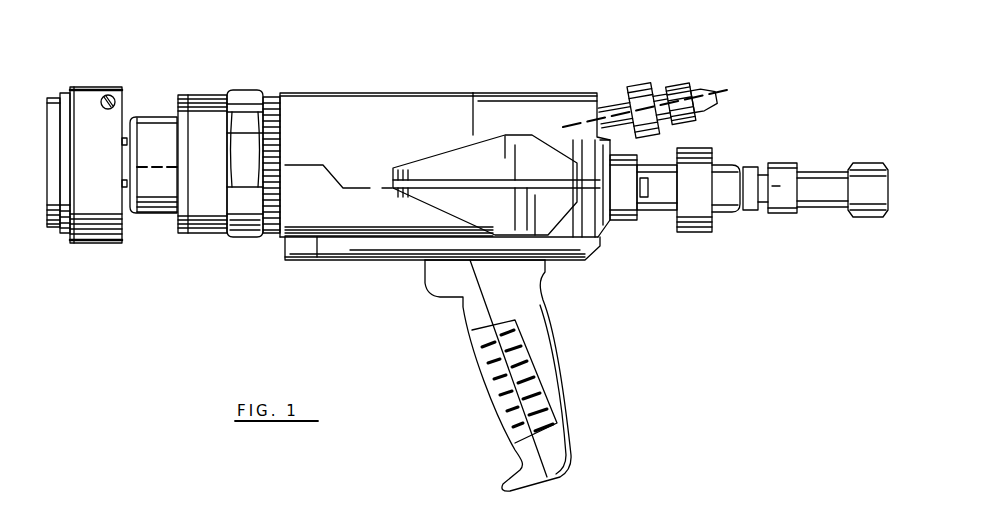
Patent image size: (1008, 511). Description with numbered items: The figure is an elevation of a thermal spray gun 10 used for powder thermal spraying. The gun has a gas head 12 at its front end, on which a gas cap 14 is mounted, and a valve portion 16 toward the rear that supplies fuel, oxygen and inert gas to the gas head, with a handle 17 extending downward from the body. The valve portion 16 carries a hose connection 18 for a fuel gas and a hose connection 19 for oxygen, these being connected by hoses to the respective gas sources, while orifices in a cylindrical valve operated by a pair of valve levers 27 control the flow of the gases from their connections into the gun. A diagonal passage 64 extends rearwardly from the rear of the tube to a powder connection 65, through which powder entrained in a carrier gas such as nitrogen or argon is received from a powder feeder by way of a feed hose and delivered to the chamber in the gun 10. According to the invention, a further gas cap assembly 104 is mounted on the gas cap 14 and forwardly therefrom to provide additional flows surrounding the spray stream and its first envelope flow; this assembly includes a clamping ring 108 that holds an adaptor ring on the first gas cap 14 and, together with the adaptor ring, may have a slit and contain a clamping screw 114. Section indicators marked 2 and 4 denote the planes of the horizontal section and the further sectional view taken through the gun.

The thermal spray gun 10 is at (308, 326).
The gas head 12 is at (338, 90).
The gas cap 14 is at (128, 135).
The valve portion 16 is at (514, 90).
The handle 17 is at (547, 350).
The hose connection 18 is at (780, 216).
The hose connection 19 is at (868, 218).
The valve levers 27 is at (437, 198).
The diagonal passage 64 is at (205, 95).
The powder connection 65 is at (683, 87).
The gas cap assembly 104 is at (100, 262).
The clamping ring 108 is at (102, 95).
The clamping screw 114 is at (104, 110).
The section line 2- 2 is at (122, 167).
The section line 4- 4 is at (432, 153).